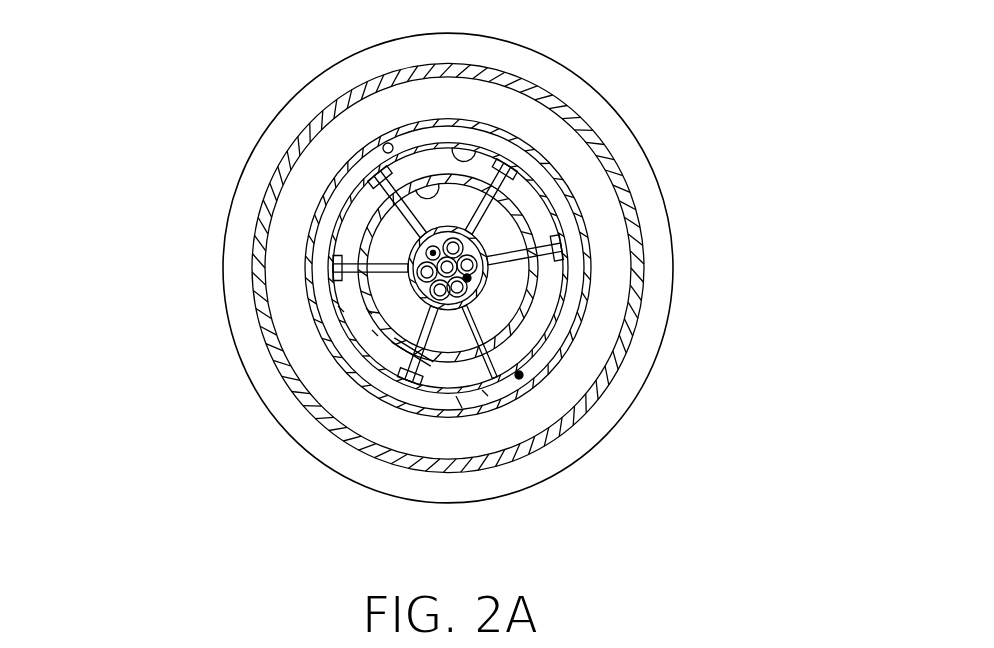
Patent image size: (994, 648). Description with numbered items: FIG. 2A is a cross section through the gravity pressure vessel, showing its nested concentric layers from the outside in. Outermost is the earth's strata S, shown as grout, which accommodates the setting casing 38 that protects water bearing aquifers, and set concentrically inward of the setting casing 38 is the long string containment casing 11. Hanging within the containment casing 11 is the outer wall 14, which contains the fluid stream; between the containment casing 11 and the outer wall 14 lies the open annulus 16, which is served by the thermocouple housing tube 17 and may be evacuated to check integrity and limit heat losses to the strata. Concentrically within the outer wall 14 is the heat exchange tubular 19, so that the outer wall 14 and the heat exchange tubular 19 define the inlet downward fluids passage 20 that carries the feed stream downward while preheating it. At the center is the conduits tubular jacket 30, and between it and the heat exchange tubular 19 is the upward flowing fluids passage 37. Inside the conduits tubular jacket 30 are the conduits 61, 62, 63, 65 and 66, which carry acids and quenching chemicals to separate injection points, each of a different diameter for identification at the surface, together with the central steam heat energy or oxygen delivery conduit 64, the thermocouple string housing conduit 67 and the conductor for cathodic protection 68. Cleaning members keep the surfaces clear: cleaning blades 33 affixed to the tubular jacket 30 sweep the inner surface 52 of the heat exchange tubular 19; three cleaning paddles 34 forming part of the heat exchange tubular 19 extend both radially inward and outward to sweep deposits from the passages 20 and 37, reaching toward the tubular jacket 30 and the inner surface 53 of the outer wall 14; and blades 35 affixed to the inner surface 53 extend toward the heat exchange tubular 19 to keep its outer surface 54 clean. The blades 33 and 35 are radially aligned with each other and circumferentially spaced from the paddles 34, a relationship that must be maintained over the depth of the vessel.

The long string containment casing 11 is at (375, 332).
The outer wall 14 is at (485, 393).
The annulus 16 is at (392, 141).
The thermocouple housing tube 17 is at (385, 146).
The heat exchange tubular 19 is at (470, 350).
The inlet downward fluids passage 20 is at (340, 308).
The conduits tubular jacket 30 is at (470, 280).
The cleaning blades 33 is at (518, 158).
The cleaning paddles 34 is at (545, 190).
The blades 35 is at (503, 380).
The upward flowing fluids passage 37 is at (404, 386).
The setting casing 38 is at (645, 325).
The inner surface of the heat exchange tubular 52 is at (440, 178).
The inner surface of the vessel outer wall 53 is at (455, 147).
The outer surface of the heat exchange tubular 54 is at (368, 310).
The conduit 61 is at (300, 300).
The conduit 62 is at (410, 297).
The conduit 63 is at (430, 286).
The steam heat energy or oxygen delivery conduit 64 is at (417, 271).
The conduit 65 is at (437, 267).
The conduit 66 is at (426, 254).
The thermocouple string housing conduit 67 is at (430, 248).
The conductor for cathodic protection 68 is at (462, 408).
The earth's strata S is at (660, 216).